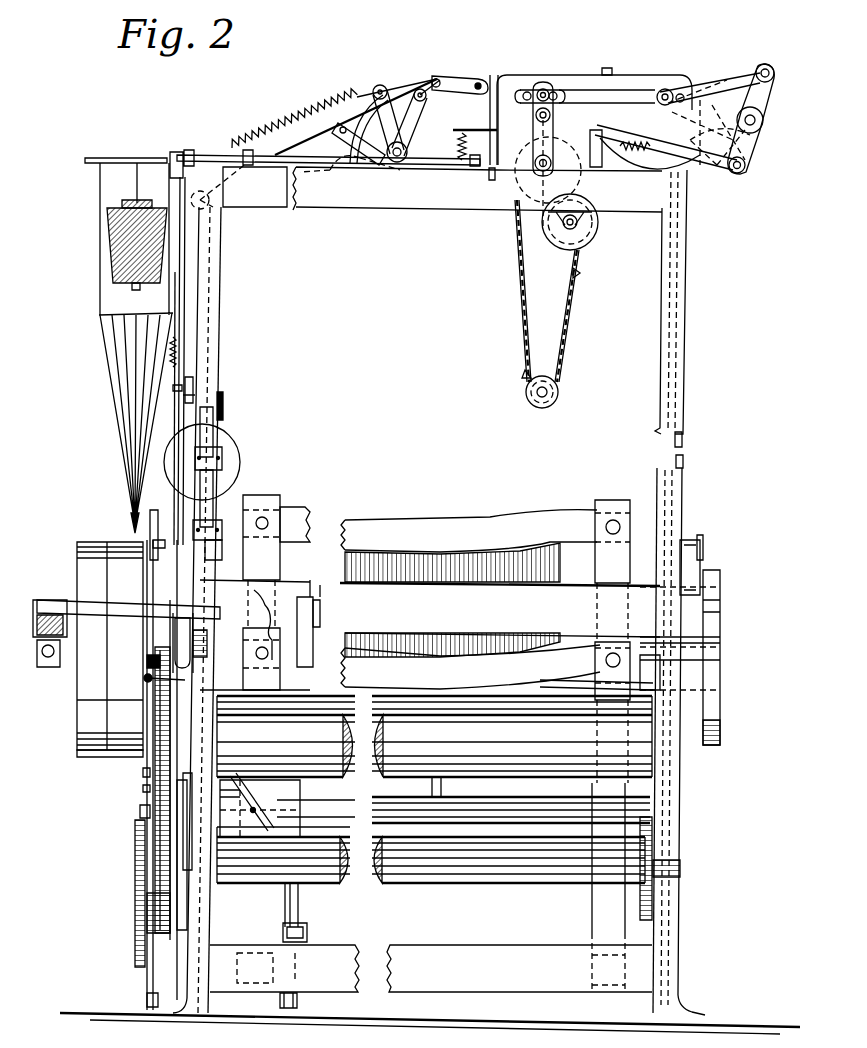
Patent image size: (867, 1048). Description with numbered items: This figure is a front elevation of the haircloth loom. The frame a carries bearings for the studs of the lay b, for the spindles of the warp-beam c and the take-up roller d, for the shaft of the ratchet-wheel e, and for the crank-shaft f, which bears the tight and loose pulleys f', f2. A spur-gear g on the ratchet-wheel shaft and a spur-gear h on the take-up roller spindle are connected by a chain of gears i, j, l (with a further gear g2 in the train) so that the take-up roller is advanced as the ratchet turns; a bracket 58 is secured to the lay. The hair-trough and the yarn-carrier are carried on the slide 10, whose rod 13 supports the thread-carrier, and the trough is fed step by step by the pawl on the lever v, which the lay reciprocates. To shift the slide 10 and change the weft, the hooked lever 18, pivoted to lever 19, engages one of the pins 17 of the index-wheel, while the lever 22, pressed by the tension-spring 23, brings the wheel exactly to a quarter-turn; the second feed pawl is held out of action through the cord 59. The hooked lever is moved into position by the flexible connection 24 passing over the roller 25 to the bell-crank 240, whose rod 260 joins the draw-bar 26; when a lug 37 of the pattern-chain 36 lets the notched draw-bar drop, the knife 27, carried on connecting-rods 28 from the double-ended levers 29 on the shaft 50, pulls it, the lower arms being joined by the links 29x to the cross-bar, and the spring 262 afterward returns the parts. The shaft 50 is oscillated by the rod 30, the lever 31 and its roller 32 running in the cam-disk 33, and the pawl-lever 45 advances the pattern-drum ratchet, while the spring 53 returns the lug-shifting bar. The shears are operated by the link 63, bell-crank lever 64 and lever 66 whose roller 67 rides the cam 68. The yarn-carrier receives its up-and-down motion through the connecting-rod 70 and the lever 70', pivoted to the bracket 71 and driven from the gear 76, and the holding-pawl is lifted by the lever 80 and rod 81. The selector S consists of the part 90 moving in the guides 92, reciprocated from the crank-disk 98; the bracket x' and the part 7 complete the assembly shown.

The frame a is at (221, 232).
The lay b is at (268, 497).
The warp-beam c is at (432, 799).
The take-up roller d is at (435, 655).
The ratchet-wheel e is at (137, 952).
The crank-shaft f is at (692, 679).
The loose pulley f2 is at (87, 560).
The tight pulley f' is at (99, 765).
The spur-gear g is at (147, 922).
The gear g2 is at (660, 868).
The spur-gear h is at (145, 773).
The gear i is at (147, 788).
The gear j is at (143, 813).
The gear l is at (160, 866).
The lever v is at (223, 616).
The bracket x' is at (39, 641).
The selector S is at (223, 547).
The lever 7 is at (55, 602).
The slide 10 is at (187, 637).
The rod 13 is at (128, 607).
The pins 17 is at (150, 693).
The hooked lever 18 is at (153, 517).
The lever 19 is at (157, 543).
The lever 22 is at (150, 981).
The tension-spring 23 is at (147, 1000).
The flexible connection 24 is at (186, 262).
The roller 25 is at (220, 209).
The draw-bar 26 is at (470, 80).
The knife 27 is at (533, 108).
The connecting-rods 28 is at (727, 80).
The double-ended levers 29 is at (752, 153).
The links 29x is at (717, 166).
The rod 30 is at (684, 460).
The lever 31 is at (705, 535).
The roller 32 is at (722, 585).
The cam-disk 33 is at (718, 623).
The pattern-chain 36 is at (564, 333).
The lugs 37 is at (521, 381).
The pawl-lever 45 is at (578, 160).
The shaft 50 is at (764, 120).
The spring 53 is at (458, 141).
The bracket 58 is at (153, 662).
The cord 59 is at (147, 752).
The link 63 is at (240, 790).
The bell-crank lever 64 is at (307, 928).
The lever 66 is at (300, 895).
The roller 67 is at (312, 592).
The cam 68 is at (315, 627).
The connecting-rod 70 is at (129, 345).
The lever 70' is at (221, 382).
The bracket 71 is at (224, 396).
The gear 76 is at (230, 440).
The pivoted lever 80 is at (186, 152).
The rod 81 is at (178, 296).
The part of selector 90 is at (208, 500).
The guides 92 is at (222, 461).
The crank-disk 98 is at (222, 463).
The bell-crank 240 is at (383, 88).
The rod 260 is at (395, 142).
The spring 262 is at (298, 120).